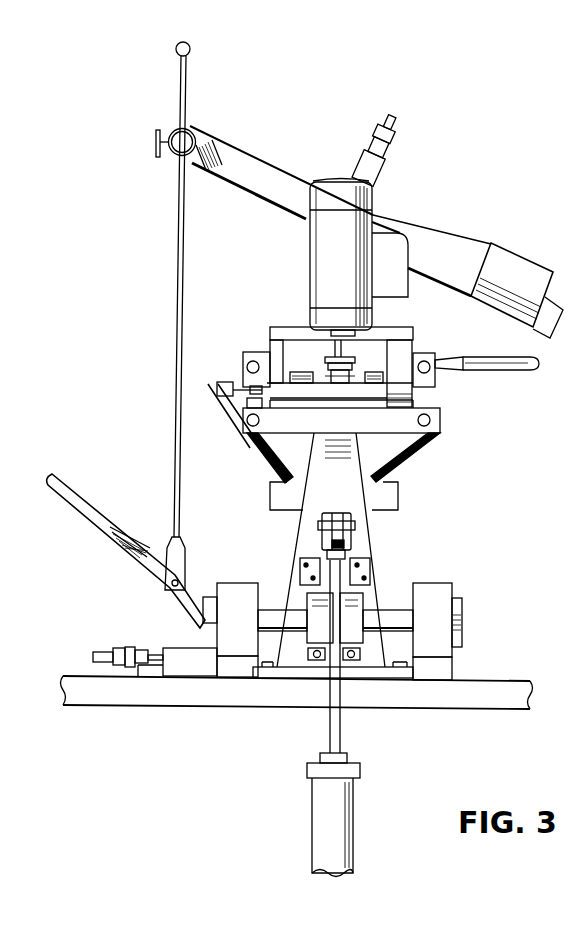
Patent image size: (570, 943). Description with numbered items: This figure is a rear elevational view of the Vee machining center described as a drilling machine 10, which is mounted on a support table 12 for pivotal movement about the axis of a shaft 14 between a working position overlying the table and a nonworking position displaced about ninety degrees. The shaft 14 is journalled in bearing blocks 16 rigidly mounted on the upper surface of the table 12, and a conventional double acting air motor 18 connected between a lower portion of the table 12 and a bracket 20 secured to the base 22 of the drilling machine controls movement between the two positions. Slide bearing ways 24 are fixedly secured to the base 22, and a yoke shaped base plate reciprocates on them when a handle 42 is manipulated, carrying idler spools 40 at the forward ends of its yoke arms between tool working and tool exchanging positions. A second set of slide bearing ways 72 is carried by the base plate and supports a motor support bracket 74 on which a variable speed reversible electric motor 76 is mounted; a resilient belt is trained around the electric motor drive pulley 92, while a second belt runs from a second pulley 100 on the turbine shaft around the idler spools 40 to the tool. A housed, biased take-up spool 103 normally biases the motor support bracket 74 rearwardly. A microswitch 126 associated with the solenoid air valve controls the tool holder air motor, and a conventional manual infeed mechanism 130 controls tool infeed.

The drilling machine 10 is at (462, 484).
The support table 12 is at (482, 690).
The shaft 14 is at (392, 620).
The bearing blocks 16 is at (238, 605).
The double acting air motor 18 is at (322, 820).
The bracket 20 is at (330, 528).
The base 22 is at (322, 496).
The slide bearing ways 24 is at (250, 436).
The idler spools 40 is at (336, 364).
The handle 42 is at (510, 372).
The slide bearing ways 72 is at (252, 352).
The motor support bracket 74 is at (285, 328).
The variable speed reversible electric motor 76 is at (323, 253).
The electric motor drive pulley 92 is at (355, 365).
The second pulley 100 is at (338, 397).
The take-up spool 103 is at (400, 363).
The microswitch 126 is at (222, 382).
The manual infeed mechanism 130 is at (132, 578).